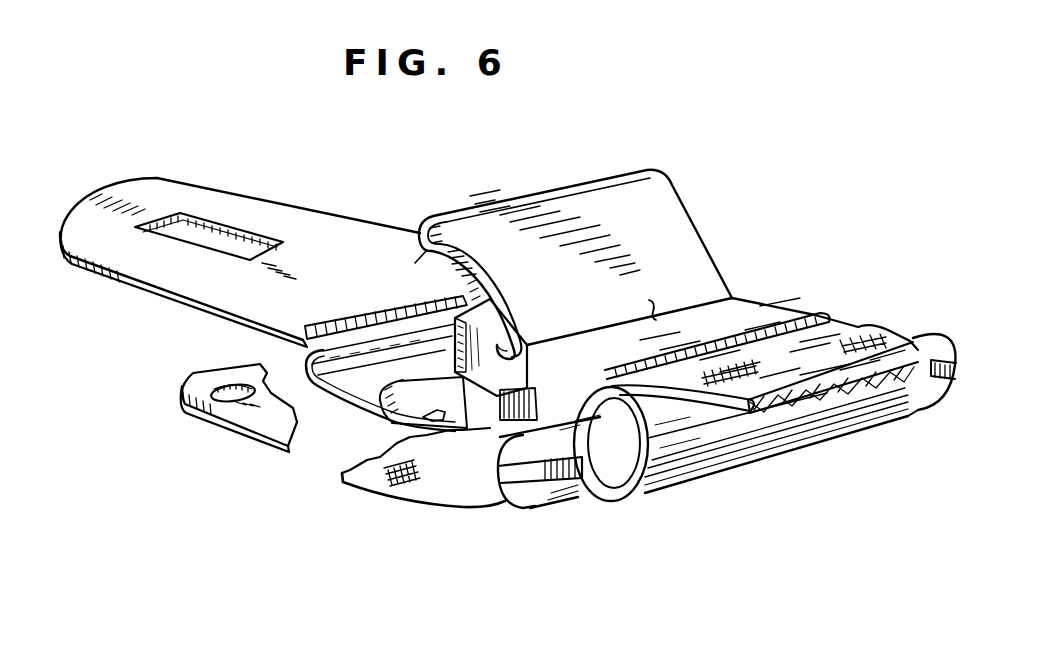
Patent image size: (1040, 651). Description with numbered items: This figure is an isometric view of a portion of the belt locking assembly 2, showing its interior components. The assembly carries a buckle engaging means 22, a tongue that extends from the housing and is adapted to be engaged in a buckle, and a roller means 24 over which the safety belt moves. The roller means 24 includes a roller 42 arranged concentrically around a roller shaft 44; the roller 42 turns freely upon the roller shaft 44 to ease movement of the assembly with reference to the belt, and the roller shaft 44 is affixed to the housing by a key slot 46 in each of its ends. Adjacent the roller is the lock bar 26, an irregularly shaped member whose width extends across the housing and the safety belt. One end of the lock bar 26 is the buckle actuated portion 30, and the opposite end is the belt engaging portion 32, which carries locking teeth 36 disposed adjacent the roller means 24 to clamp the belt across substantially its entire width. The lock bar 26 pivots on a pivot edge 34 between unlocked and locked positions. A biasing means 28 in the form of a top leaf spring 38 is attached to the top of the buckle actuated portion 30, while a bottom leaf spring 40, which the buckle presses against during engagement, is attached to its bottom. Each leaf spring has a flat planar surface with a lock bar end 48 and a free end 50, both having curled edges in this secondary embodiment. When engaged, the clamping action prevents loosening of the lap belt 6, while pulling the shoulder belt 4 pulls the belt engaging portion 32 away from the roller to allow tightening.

The belt locking assembly 2 is at (254, 513).
The shoulder belt 4 is at (833, 392).
The lap belt 6 is at (407, 497).
The buckle engaging means 22 is at (275, 219).
The roller means 24 is at (713, 488).
The lock bar 26 is at (747, 313).
The biasing means 28 is at (550, 172).
The buckle actuated portion 30 is at (463, 350).
The belt engaging portion 32 is at (627, 357).
The pivot edge 34 is at (467, 430).
The locking teeth 36 is at (587, 393).
The top leaf spring 38 is at (700, 228).
The bottom leaf spring 40 is at (357, 400).
The roller 42 is at (770, 441).
The roller shaft 44 is at (604, 465).
The key slot 46 is at (560, 480).
The lock bar end 48 is at (432, 422).
The free end 50 is at (427, 333).